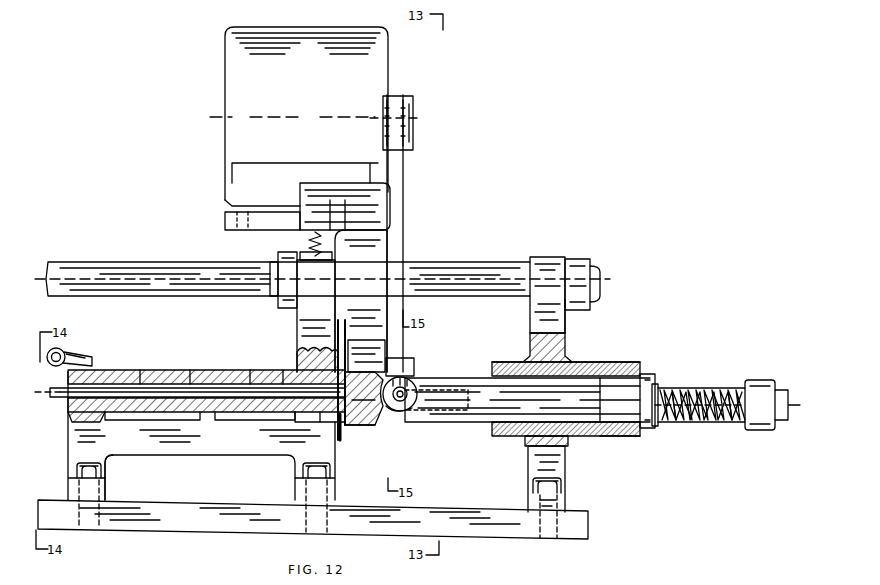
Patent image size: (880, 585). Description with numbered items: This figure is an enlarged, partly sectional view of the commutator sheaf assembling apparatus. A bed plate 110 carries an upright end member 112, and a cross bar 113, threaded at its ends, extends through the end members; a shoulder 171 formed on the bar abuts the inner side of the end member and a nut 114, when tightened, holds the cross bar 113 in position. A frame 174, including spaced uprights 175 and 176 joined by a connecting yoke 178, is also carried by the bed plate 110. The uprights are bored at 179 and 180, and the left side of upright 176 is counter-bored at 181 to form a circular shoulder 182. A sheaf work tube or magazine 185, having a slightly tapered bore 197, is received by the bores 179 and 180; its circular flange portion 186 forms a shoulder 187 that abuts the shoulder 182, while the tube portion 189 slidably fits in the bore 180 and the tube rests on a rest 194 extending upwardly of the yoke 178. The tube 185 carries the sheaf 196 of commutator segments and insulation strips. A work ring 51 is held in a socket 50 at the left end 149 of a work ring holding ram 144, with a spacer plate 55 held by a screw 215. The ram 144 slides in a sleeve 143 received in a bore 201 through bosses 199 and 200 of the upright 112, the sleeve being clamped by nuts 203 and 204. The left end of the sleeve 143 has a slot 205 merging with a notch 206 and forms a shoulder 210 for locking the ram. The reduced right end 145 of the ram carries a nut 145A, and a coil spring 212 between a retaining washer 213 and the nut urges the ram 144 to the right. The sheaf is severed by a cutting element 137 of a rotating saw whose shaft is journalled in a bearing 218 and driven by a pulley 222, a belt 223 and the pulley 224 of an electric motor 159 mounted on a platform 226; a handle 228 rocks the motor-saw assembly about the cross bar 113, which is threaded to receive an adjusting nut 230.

The socket 50 is at (343, 420).
The work ring 51 is at (352, 428).
The spacer plate 55 is at (366, 427).
The bed plate 110 is at (197, 501).
The upright end member 112 is at (565, 326).
The cross bar 113 is at (422, 262).
The nut 114 is at (582, 262).
The plate 137 is at (345, 330).
The sleeve 143 is at (433, 378).
The work ring holding rod or ram 144 is at (568, 432).
The right end of ram 145 is at (690, 388).
The nut 145A is at (760, 381).
The left end of ram 149 is at (360, 428).
The electric motor 159 is at (225, 106).
The shoulder 171 is at (535, 262).
The frame 174 is at (222, 456).
The upright 175 is at (68, 449).
The upright 176 is at (330, 475).
The yoke 178 is at (124, 455).
The bore 179 is at (98, 420).
The bore 180 is at (298, 352).
The counter-bore 181 is at (290, 372).
The circular shoulder 182 is at (304, 422).
The sheaf work tube or magazine 185 is at (148, 370).
The circular flange portion 186 is at (275, 421).
The shoulder 187 is at (256, 370).
The tube portion 189 is at (328, 422).
The rest 194 is at (203, 420).
The sheaf 196 is at (188, 370).
The bore of tube 197 is at (110, 370).
The boss 199 is at (520, 362).
The boss 200 is at (578, 362).
The bore 201 is at (610, 362).
The nut 203 is at (504, 362).
The nut 204 is at (645, 374).
The slot 205 is at (450, 410).
The notch 206 is at (404, 412).
The shoulder 210 is at (413, 408).
The coil spring 212 is at (700, 393).
The retaining washer 213 is at (656, 384).
The screw 215 is at (370, 416).
The bearing 218 is at (352, 352).
The pulley 222 is at (410, 348).
The belt 223 is at (404, 192).
The pulley 224 is at (414, 110).
The platform 226 is at (230, 230).
The handle 228 is at (347, 183).
The adjusting nut 230 is at (293, 252).